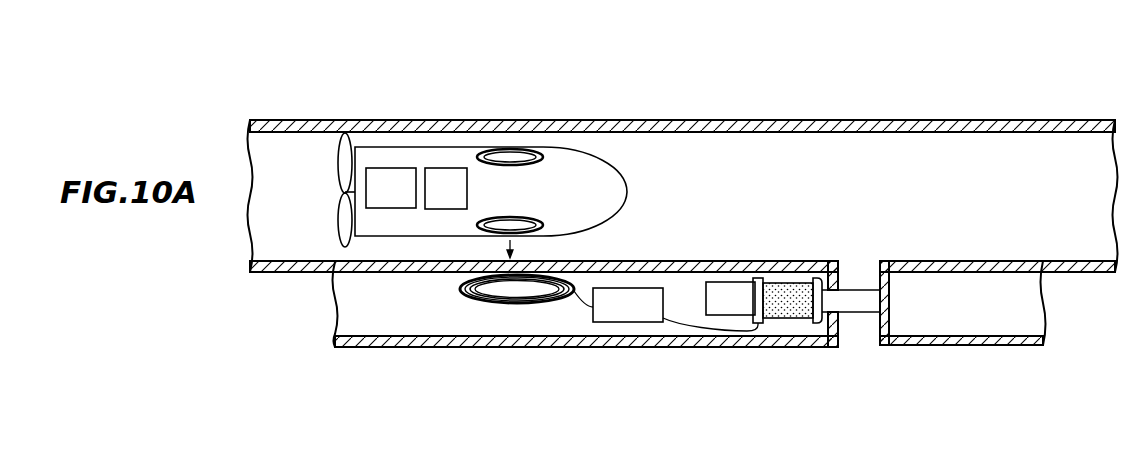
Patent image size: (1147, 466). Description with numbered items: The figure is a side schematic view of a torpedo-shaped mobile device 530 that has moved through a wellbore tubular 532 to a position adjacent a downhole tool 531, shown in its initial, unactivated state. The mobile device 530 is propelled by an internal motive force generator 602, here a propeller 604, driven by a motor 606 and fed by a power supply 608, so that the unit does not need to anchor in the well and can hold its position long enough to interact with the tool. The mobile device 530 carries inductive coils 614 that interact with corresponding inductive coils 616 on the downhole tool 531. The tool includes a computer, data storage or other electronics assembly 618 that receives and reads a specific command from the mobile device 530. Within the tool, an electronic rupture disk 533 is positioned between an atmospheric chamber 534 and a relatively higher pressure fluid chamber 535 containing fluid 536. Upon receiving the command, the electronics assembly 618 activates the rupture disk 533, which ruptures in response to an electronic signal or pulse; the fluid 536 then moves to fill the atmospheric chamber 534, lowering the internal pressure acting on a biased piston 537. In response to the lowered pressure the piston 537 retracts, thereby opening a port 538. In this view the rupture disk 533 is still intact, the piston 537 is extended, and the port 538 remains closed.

The mobile device 530 is at (601, 150).
The downhole tool 531 is at (694, 352).
The wellbore tubular 532 is at (876, 120).
The rupture disk 533 is at (758, 278).
The atmospheric chamber 534 is at (724, 282).
The fluid chamber 535 is at (783, 318).
The fluid 536 is at (793, 318).
The biased piston 537 is at (852, 290).
The port 538 is at (862, 330).
The motive force generator 602 is at (326, 103).
The propeller 604 is at (349, 135).
The motor 606 is at (386, 168).
The power supply 608 is at (441, 168).
The inductive coils 614 is at (536, 150).
The inductive coils 616 is at (493, 303).
The electronics assembly 618 is at (623, 322).